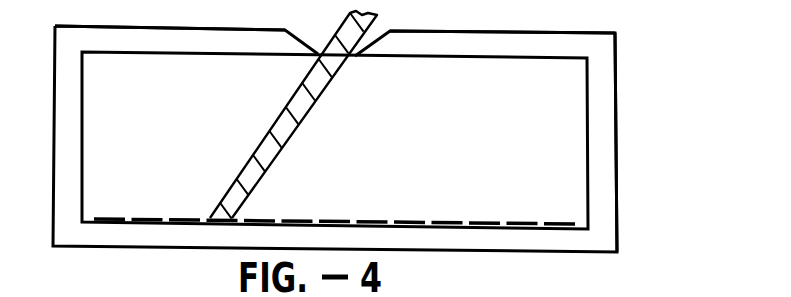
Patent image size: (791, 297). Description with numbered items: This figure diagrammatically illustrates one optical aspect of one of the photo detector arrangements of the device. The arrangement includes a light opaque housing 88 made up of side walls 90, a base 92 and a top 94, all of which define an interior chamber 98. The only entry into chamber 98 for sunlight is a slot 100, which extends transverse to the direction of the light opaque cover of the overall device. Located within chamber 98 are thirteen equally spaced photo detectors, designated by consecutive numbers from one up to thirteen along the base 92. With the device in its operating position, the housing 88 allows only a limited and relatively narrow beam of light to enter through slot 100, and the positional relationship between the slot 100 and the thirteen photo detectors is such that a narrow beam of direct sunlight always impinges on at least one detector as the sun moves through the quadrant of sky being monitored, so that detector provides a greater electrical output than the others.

The light opaque housing 88 is at (622, 115).
The side walls 90 is at (606, 193).
The base 92 is at (503, 246).
The top 94 is at (588, 42).
The interior chamber 98 is at (504, 151).
The slot 100 is at (323, 46).